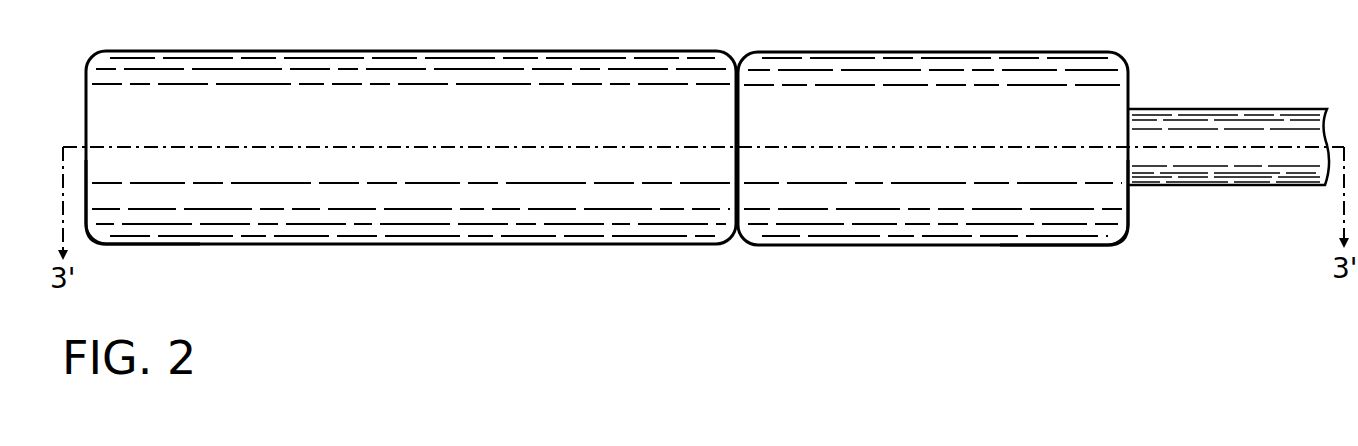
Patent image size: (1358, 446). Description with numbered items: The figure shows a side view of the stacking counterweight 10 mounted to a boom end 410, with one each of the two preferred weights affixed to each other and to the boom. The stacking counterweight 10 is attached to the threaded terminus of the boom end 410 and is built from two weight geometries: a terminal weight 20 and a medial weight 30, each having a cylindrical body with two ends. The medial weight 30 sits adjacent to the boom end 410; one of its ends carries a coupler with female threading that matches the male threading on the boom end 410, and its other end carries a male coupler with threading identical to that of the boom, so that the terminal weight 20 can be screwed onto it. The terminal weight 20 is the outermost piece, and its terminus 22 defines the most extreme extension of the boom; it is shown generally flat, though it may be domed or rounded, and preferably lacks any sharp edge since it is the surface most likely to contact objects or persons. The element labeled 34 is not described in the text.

The stacking counterweight 10 is at (640, 184).
The terminal weight 20 is at (238, 252).
The terminus 22 is at (77, 216).
The medial weight 30 is at (947, 252).
The end wall of second housing section 34 is at (1131, 218).
The boom end 410 is at (1258, 184).